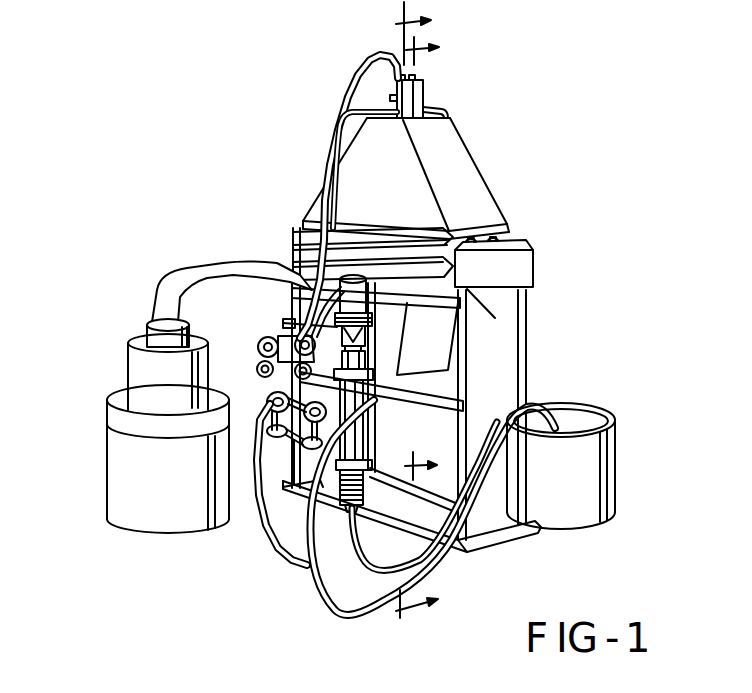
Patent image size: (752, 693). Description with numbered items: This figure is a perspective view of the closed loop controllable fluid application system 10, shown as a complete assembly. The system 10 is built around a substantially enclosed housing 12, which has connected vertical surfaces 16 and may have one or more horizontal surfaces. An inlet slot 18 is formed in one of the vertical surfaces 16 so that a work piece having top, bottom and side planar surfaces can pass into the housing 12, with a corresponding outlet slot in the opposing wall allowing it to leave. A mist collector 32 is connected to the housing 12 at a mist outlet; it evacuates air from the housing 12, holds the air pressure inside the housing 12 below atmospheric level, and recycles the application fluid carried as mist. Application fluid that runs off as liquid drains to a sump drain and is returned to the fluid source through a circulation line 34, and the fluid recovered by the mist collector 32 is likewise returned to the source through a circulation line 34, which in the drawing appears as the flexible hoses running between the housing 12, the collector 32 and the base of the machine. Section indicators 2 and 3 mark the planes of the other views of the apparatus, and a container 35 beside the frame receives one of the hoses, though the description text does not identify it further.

The section line 2- 2 is at (427, 309).
The section line 3- 3 is at (433, 263).
The closed loop controllable fluid application system 10 is at (148, 218).
The substantially enclosed housing 12 is at (483, 172).
The vertical surfaces 16 is at (370, 147).
The inlet slot 18 is at (367, 227).
The mist collector 32 is at (127, 367).
The circulation line 34 is at (338, 197).
The collection bucket 35 is at (617, 447).